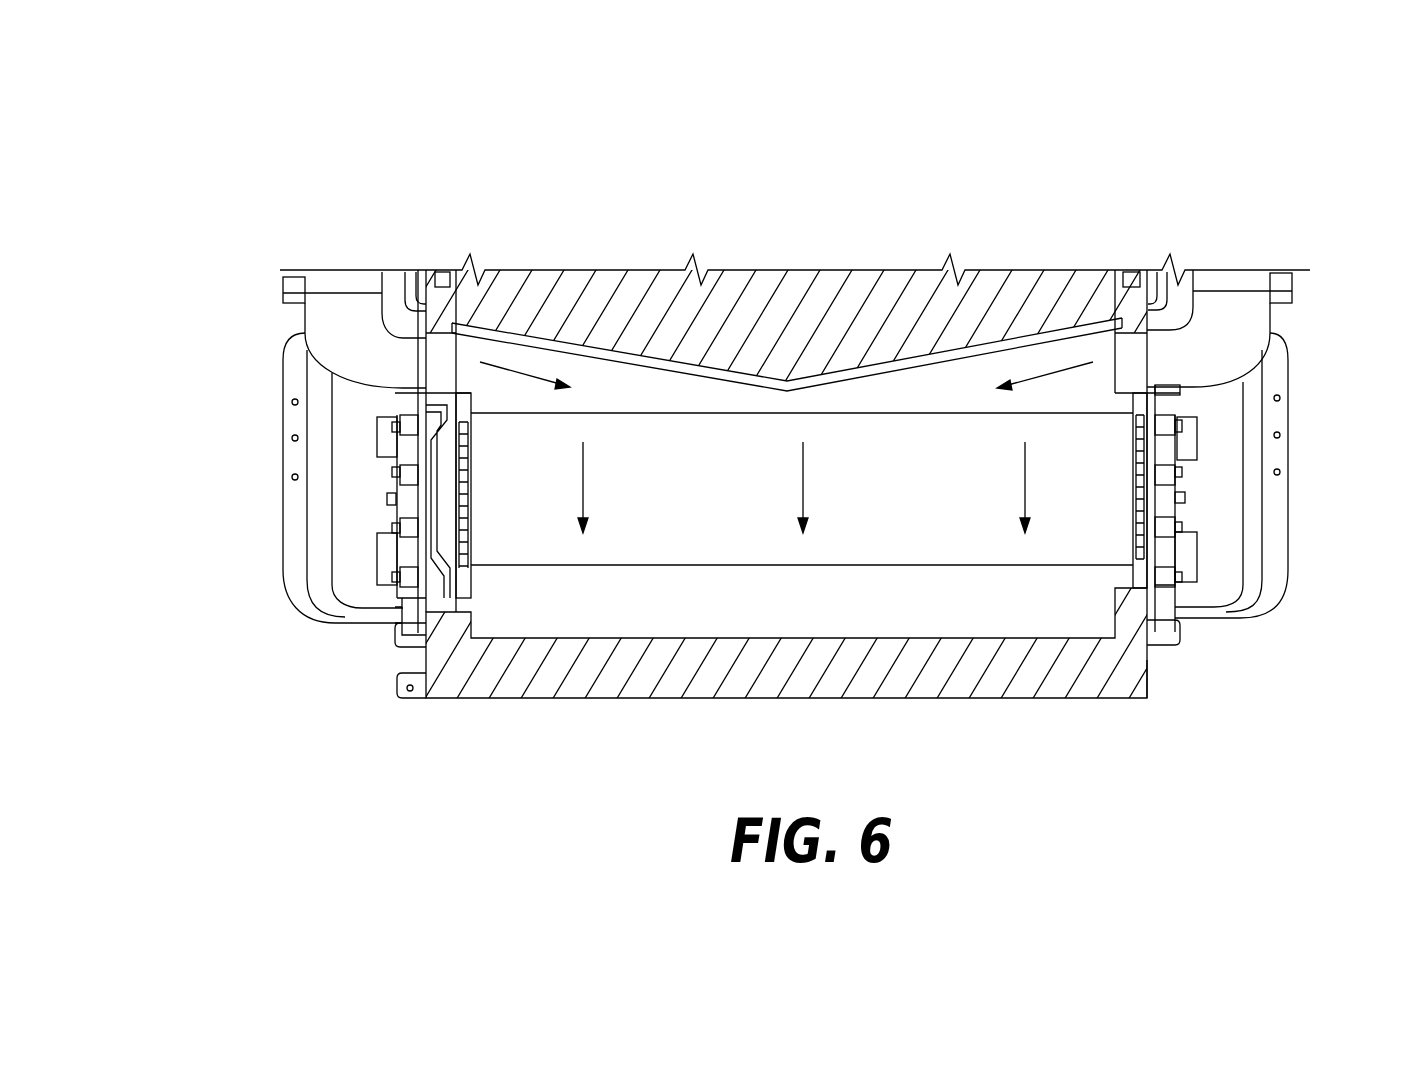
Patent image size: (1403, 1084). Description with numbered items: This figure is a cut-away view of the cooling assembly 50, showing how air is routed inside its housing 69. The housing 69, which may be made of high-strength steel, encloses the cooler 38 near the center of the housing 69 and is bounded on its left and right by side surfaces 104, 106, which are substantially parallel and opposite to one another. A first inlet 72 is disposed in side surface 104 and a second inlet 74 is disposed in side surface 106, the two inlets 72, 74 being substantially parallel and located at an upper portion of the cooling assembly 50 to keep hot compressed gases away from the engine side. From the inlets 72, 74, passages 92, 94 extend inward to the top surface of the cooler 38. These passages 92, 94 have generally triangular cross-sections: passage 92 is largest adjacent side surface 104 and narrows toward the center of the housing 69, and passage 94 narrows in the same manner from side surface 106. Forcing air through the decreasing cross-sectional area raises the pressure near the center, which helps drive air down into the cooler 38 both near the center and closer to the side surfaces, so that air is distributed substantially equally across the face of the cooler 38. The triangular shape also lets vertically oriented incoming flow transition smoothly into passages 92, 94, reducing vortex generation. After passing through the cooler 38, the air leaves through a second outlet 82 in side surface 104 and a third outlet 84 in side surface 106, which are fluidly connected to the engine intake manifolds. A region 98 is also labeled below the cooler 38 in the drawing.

The cooling assembly 50 is at (803, 212).
The first inlet 72 is at (264, 339).
The second inlet 74 is at (1305, 331).
The second outlet 82 is at (262, 540).
The third outlet 84 is at (1318, 541).
The passage 92 is at (640, 397).
The passage 94 is at (966, 394).
The cooler 38 is at (683, 507).
The lower plenum 98 is at (795, 607).
The housing 69 is at (737, 700).
The side surface 104 is at (426, 653).
The side surface 106 is at (1148, 660).